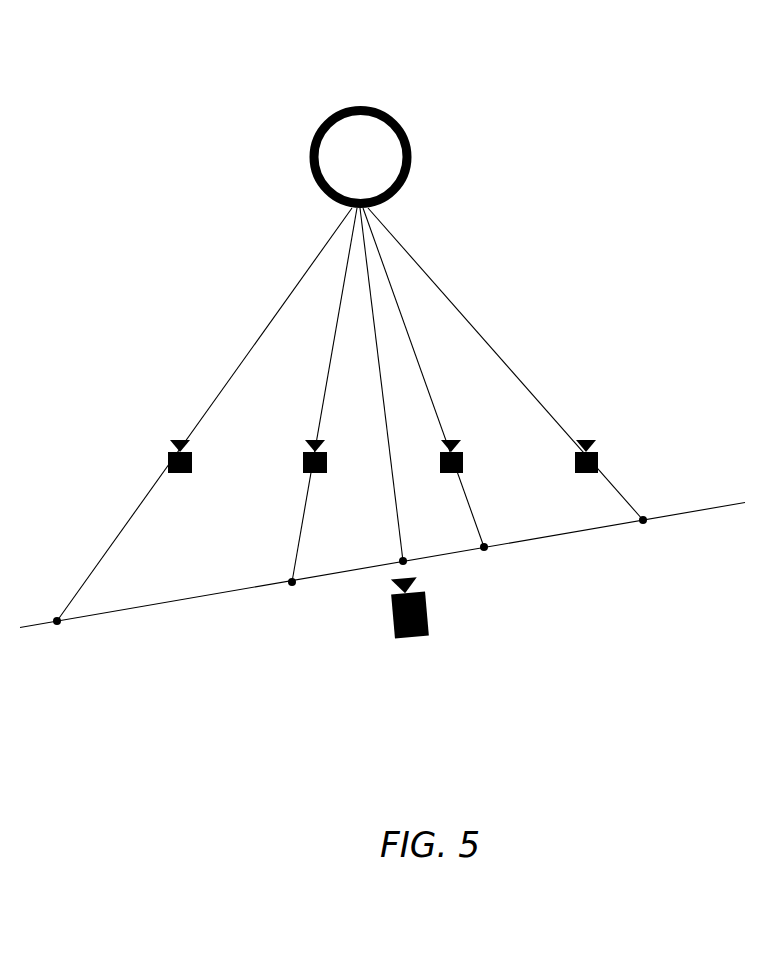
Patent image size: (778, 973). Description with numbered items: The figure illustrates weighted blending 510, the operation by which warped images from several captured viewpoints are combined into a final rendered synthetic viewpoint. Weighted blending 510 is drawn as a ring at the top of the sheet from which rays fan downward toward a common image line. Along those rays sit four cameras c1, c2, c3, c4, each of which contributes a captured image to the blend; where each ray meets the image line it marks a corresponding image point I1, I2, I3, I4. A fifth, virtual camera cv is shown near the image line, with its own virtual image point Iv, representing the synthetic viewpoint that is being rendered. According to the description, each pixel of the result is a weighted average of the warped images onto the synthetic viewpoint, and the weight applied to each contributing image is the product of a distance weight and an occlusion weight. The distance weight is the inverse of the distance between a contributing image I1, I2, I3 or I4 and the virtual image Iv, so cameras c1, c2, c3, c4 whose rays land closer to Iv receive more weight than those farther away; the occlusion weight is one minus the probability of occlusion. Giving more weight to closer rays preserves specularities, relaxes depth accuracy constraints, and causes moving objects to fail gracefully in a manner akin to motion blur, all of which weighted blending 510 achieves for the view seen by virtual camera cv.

The weighted blending 510 is at (315, 133).
The camera 1 c1 is at (197, 464).
The camera 2 c2 is at (336, 464).
The camera 3 c3 is at (475, 464).
The camera 4 c4 is at (611, 464).
The virtual camera cv is at (424, 608).
The image 1 I1 is at (62, 643).
The image 2 I2 is at (294, 607).
The image 3 I3 is at (496, 573).
The image 4 I4 is at (654, 547).
The virtual image Iv is at (416, 538).